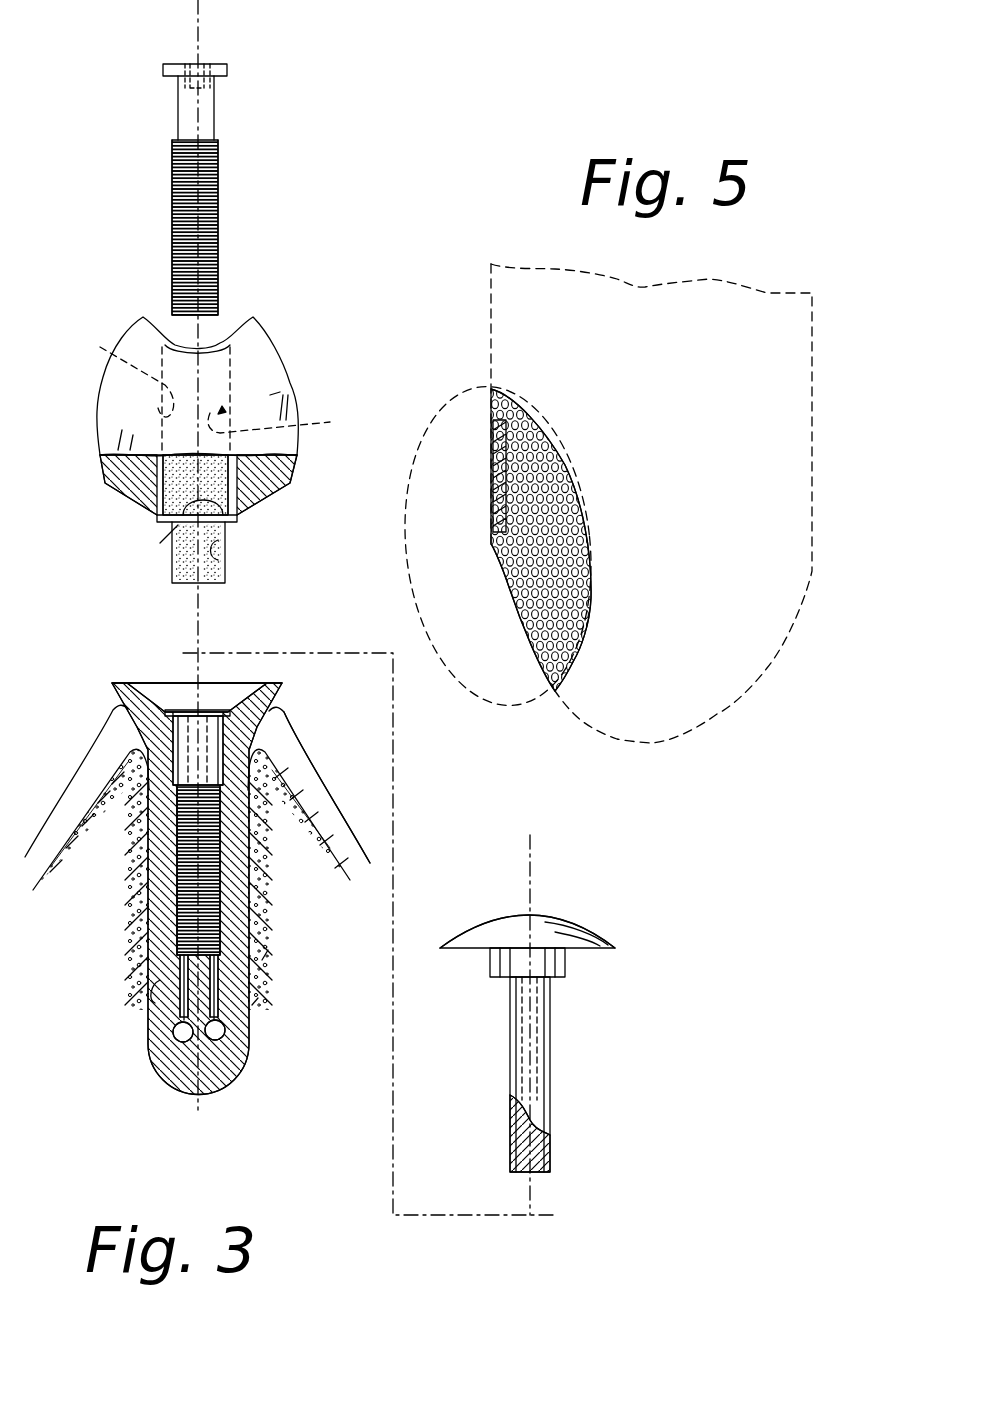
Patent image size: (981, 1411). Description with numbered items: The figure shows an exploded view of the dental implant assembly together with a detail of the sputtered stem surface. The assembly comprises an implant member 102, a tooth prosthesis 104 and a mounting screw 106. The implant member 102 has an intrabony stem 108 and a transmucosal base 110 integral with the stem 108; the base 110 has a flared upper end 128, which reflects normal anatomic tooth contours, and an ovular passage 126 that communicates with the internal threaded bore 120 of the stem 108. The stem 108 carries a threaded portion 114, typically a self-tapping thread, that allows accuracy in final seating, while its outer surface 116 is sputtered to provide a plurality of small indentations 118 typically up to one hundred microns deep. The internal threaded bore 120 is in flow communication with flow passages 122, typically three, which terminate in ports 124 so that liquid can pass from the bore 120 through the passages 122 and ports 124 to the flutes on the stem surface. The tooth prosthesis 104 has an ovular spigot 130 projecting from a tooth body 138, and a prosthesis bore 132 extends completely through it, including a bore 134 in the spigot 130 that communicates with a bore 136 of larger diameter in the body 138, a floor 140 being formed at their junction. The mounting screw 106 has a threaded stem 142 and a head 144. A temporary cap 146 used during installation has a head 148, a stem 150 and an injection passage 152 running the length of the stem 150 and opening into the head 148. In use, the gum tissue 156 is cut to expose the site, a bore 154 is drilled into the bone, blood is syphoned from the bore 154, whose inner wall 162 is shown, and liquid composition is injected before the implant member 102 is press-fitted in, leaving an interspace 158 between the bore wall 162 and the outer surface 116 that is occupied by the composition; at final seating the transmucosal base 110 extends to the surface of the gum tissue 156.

In FIG. 3, the implant member 102 is at (249, 1037).
In FIG. 3, the tooth prosthesis 104 is at (281, 352).
In FIG. 3, the mounting screw 106 is at (214, 201).
In FIG. 3, the intrabony stem 108 is at (155, 959).
In FIG. 3, the transmucosal base 110 is at (116, 689).
In FIG. 3, the threaded portion 114 is at (268, 868).
In FIG. 5, the outer surface 116 is at (543, 468).
In FIG. 5, the indentations 118 is at (495, 517).
In FIG. 3, the internal threaded bore 120 is at (190, 921).
In FIG. 3, the flow passages 122 is at (168, 1040).
In FIG. 3, the ports 124 is at (222, 1045).
In FIG. 3, the ovular passage 126 is at (212, 770).
In FIG. 3, the flared head 128 is at (280, 688).
In FIG. 3, the ovular spigot 130 is at (225, 568).
In FIG. 3, the prosthesis bore 132 is at (267, 401).
In FIG. 3, the bore 134 is at (222, 548).
In FIG. 3, the bore 136 is at (122, 367).
In FIG. 3, the tooth body 138 is at (270, 395).
In FIG. 3, the floor 140 is at (140, 550).
In FIG. 3, the threaded stem 142 is at (218, 278).
In FIG. 3, the head 144 is at (227, 74).
In FIG. 3, the temporary cap 146 is at (578, 920).
In FIG. 3, the head 148 is at (490, 918).
In FIG. 3, the stem 150 is at (550, 1059).
In FIG. 3, the injection passage 152 is at (512, 1163).
In FIG. 3, the bore 154 is at (262, 960).
In FIG. 3, the gum tissue 156 is at (330, 788).
In FIG. 3, the interspace 158 is at (252, 1005).
In FIG. 3, the inner wall 162 is at (162, 985).